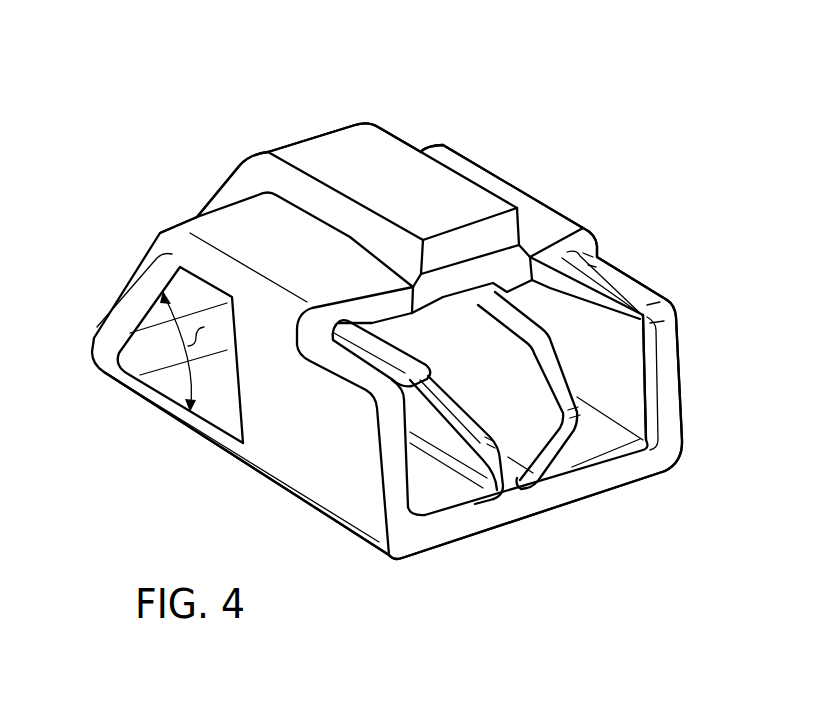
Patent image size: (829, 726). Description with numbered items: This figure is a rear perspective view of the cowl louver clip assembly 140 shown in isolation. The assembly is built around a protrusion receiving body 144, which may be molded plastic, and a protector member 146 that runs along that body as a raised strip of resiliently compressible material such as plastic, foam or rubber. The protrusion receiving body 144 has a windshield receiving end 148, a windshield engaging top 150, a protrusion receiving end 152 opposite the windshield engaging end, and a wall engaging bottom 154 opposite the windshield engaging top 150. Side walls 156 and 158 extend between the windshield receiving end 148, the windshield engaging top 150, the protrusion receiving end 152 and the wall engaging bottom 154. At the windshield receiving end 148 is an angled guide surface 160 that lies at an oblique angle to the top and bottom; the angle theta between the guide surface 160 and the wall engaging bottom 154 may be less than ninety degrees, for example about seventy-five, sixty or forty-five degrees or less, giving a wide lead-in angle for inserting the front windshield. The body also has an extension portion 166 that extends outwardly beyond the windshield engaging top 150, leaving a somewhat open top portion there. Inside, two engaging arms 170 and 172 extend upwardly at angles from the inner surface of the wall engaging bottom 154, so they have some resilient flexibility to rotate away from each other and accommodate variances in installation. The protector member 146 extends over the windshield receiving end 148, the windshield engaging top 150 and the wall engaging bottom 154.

The cowl louver clip assembly 140 is at (563, 117).
The protrusion receiving body 144 is at (330, 262).
The protector member 146 is at (348, 162).
The windshield receiving end 148 is at (199, 160).
The windshield engaging top 150 is at (439, 116).
The protrusion receiving end 152 is at (585, 522).
The wall engaging bottom 154 is at (343, 553).
The side wall 156 is at (266, 450).
The side wall 158 is at (658, 264).
The angled guide surface 160 is at (132, 286).
The extension portion 166 is at (678, 387).
The engaging arm 170 is at (453, 408).
The engaging arm 172 is at (560, 378).